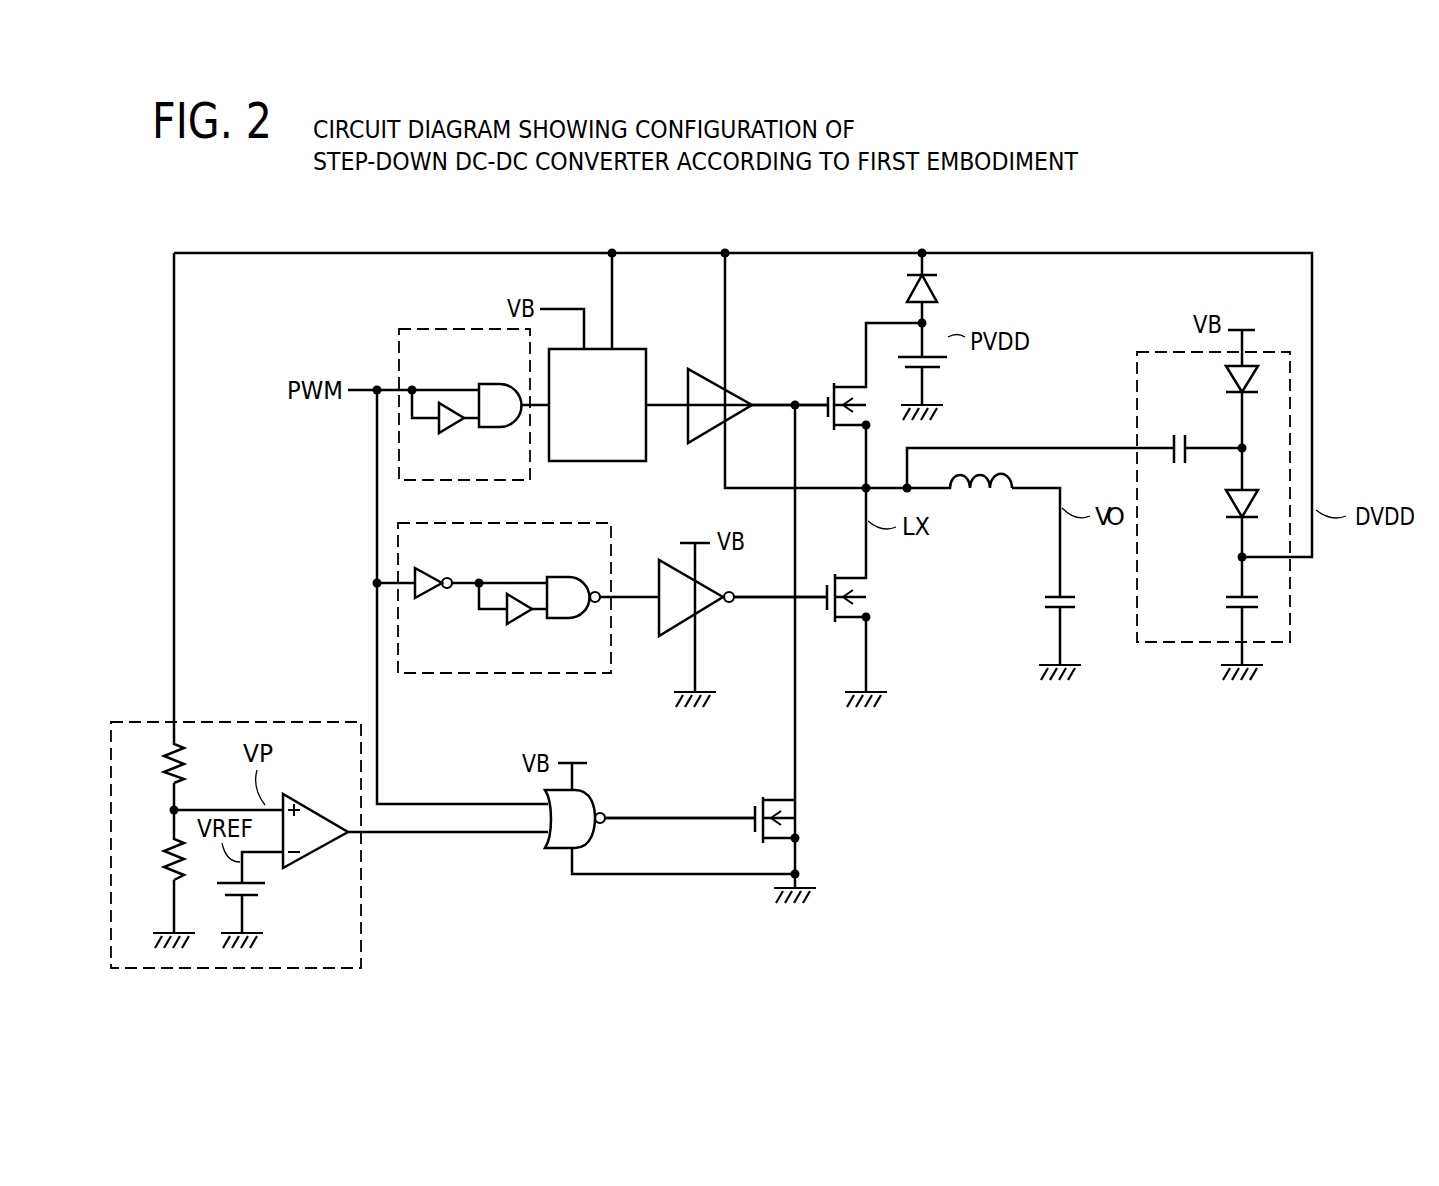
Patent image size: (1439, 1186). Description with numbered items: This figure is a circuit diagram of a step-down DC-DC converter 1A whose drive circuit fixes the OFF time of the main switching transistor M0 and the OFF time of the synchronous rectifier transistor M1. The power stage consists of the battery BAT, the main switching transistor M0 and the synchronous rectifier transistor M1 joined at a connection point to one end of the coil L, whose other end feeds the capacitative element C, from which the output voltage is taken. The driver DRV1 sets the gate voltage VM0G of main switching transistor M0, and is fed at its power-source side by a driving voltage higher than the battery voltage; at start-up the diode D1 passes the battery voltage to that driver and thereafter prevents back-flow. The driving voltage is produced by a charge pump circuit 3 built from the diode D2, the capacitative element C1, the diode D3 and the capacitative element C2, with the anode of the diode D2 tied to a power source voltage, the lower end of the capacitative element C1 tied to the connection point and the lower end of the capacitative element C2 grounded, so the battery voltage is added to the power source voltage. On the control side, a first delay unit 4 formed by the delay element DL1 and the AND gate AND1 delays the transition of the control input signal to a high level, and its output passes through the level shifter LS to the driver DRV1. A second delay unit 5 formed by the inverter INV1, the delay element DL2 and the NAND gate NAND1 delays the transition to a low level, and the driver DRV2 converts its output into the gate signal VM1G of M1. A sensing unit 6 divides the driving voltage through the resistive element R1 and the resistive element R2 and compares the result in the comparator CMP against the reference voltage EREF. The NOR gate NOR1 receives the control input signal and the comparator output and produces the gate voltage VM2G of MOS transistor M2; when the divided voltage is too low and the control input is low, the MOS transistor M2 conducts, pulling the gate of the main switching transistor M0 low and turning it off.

The step-down DC-DC converter 1A is at (1213, 238).
The charge pump circuit 3 is at (1290, 612).
The first delay unit 4 is at (443, 329).
The second delay unit 5 is at (440, 673).
The sensing unit 6 is at (362, 942).
The AND gate AND1 is at (490, 389).
The delay element DL1 is at (452, 423).
The level shifter LS is at (605, 458).
The driver DRV1 is at (700, 357).
The gate voltage of main switching transistor M0 VM0G is at (780, 398).
The main switching transistor M0 is at (848, 378).
The diode D1 is at (937, 290).
The battery BAT is at (947, 370).
The coil L is at (959, 502).
The capacitative element C is at (1050, 605).
The diode D2 is at (1226, 382).
The capacitative element C1 is at (1181, 433).
The diode D3 is at (1226, 502).
The capacitative element C2 is at (1225, 605).
The inverter INV1 is at (430, 592).
The delay element DL2 is at (525, 620).
The NAND gate NAND1 is at (560, 577).
The driver DRV2 is at (655, 628).
The gate signal of M1 VM1G is at (757, 605).
The synchronous rectifier transistor M1 is at (845, 622).
The resistive element R1 is at (153, 761).
The resistive element R2 is at (153, 857).
The comparator CMP is at (328, 810).
The reference voltage EREF is at (250, 898).
The NOR gate NOR1 is at (530, 850).
The gate voltage of MOS transistor M2 VM2G is at (705, 815).
The MOS transistor M2 is at (783, 795).